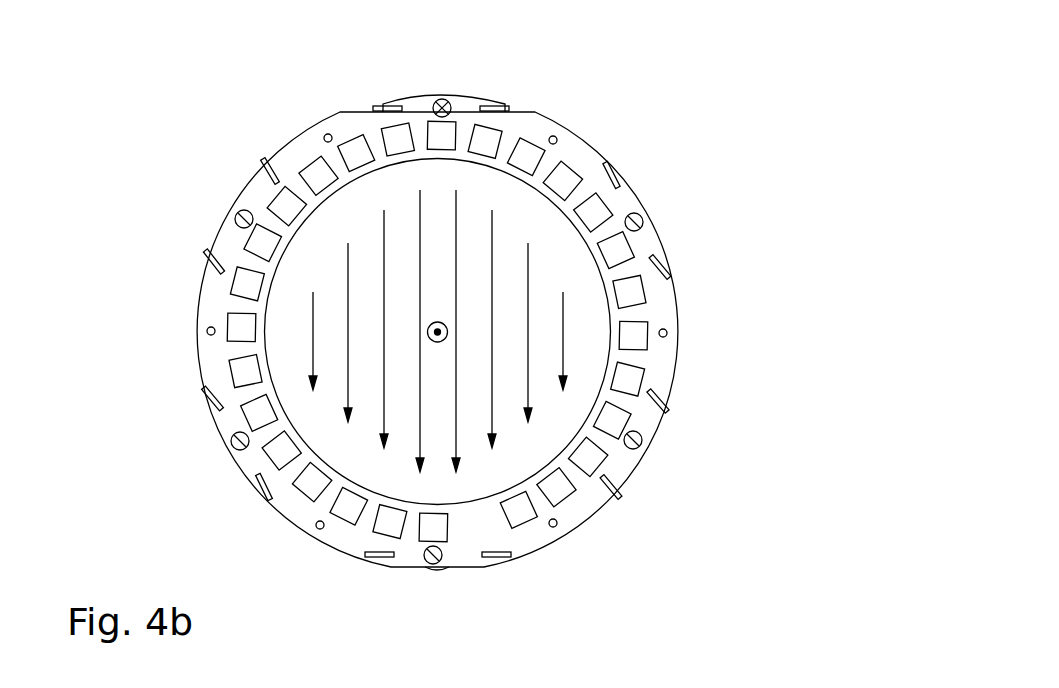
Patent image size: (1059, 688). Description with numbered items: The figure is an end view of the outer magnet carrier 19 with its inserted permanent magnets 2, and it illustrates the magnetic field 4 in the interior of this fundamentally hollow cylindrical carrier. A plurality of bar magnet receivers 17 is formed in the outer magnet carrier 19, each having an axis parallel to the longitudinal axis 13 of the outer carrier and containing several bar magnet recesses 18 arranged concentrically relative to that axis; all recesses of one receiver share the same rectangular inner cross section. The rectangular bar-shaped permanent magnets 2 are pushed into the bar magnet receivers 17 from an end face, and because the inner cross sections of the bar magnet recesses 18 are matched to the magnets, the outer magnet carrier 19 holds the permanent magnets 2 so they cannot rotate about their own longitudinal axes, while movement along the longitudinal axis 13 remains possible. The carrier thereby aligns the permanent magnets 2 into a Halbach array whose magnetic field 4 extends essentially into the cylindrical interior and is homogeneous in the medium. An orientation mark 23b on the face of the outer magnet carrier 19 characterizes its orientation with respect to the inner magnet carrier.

The permanent magnets 2 is at (635, 288).
The magnetic field 4 is at (523, 212).
The longitudinal axis 13 is at (440, 327).
The bar magnet receivers 17 is at (293, 491).
The bar magnet recesses 18 is at (432, 539).
The outer magnet carrier 19 is at (630, 200).
The orientation mark 23b is at (438, 104).